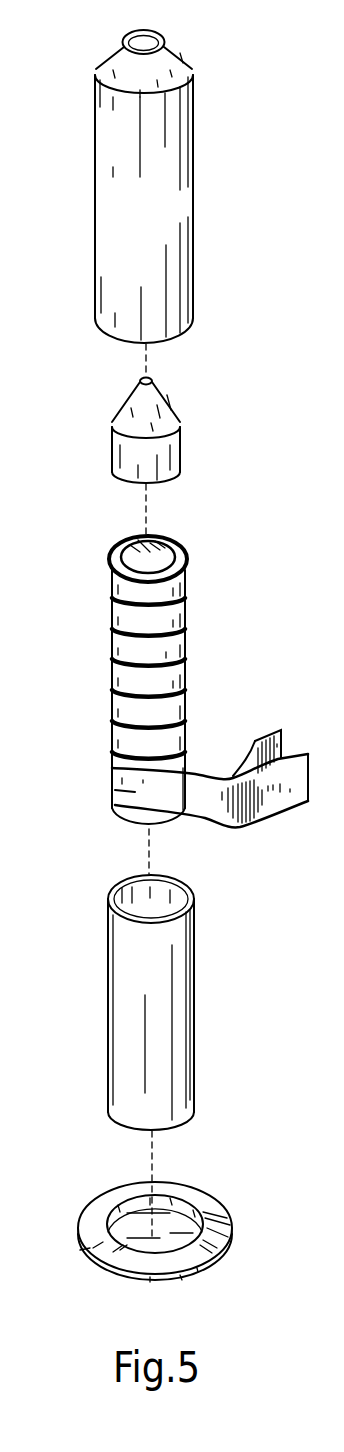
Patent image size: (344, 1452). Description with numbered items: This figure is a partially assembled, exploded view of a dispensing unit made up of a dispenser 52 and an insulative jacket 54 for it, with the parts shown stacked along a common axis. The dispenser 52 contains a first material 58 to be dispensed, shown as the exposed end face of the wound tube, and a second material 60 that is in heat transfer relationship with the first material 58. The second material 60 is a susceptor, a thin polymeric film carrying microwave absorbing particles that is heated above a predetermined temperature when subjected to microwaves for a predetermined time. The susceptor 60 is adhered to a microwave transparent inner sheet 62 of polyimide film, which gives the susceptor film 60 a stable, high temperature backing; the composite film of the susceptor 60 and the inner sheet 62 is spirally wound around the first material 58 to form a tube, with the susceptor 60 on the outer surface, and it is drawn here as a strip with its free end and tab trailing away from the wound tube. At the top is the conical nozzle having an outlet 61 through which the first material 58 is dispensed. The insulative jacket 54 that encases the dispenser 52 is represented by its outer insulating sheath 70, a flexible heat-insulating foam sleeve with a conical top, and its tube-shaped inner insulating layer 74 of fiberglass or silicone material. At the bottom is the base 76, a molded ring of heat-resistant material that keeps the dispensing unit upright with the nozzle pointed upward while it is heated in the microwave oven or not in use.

The dispenser 52 is at (153, 679).
The insulative jacket 54 is at (179, 186).
The first material 58 is at (127, 551).
The second material 60 is at (210, 773).
The outlet 61 is at (146, 379).
The inner sheet 62 is at (268, 738).
The outer insulating sheath 70 is at (165, 237).
The inner insulating layer 74 is at (160, 1007).
The base 76 is at (210, 1248).